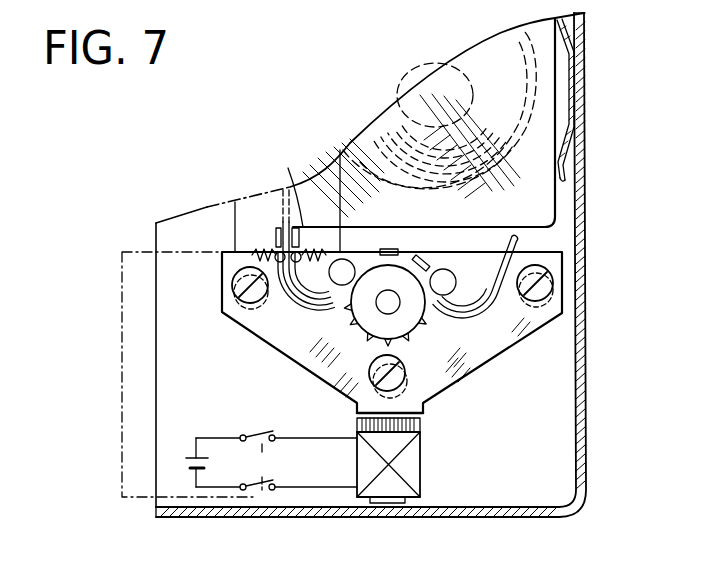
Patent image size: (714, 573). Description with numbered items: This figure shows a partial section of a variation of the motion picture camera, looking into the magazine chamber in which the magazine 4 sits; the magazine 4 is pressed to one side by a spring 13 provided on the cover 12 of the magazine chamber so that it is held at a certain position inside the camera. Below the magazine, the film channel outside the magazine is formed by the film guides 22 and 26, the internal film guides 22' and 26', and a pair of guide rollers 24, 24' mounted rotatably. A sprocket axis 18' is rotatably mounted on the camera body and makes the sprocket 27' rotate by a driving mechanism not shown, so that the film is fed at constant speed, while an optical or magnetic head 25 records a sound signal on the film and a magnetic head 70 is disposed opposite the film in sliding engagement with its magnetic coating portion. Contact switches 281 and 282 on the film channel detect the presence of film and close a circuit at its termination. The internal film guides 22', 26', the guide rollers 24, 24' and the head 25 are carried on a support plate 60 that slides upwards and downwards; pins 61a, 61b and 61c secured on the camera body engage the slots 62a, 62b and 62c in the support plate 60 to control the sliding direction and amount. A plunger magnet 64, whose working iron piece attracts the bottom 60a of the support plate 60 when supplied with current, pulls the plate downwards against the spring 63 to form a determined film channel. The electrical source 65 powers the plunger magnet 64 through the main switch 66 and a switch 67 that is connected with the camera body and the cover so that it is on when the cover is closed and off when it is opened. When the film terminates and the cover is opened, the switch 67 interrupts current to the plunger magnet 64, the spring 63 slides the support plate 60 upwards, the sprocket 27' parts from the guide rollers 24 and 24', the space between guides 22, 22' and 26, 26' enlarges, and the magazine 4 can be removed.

The magazine 4 is at (490, 68).
The cover 12 is at (587, 201).
The spring 13 is at (571, 140).
The sprocket axis 18' is at (390, 319).
The film guide 22 is at (296, 295).
The internal film guide 22' is at (307, 307).
The guide roller 24 is at (358, 240).
The guide roller 24' is at (457, 271).
The optical or magnetic head 25 is at (390, 249).
The film guide 26 is at (479, 311).
The internal film guide 26' is at (481, 313).
The sprocket 27' is at (405, 329).
The support plate 60 is at (320, 368).
The bottom of the support plate 60a is at (357, 413).
The pin 61a is at (230, 275).
The pin 61b is at (405, 378).
The pin 61c is at (553, 282).
The slot 62a is at (223, 312).
The slot 62b is at (393, 400).
The slot 62c is at (552, 308).
The spring 63 is at (420, 428).
The plunger magnet 64 is at (414, 474).
The electrical source 65 is at (180, 459).
The main switch 66 is at (276, 460).
The switch 67 is at (265, 491).
The magnetic head 70 is at (424, 258).
The contact switch 281 is at (278, 252).
The contact switch 282 is at (287, 190).